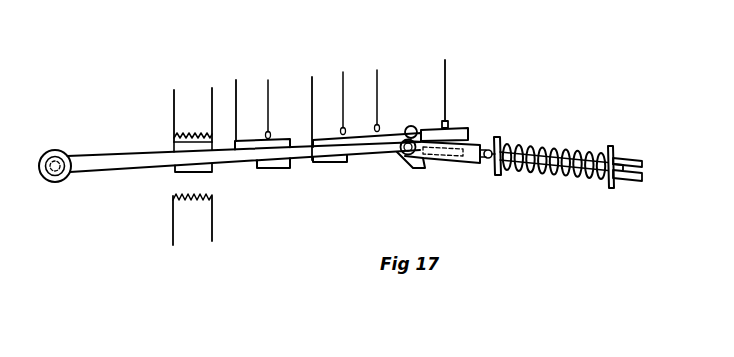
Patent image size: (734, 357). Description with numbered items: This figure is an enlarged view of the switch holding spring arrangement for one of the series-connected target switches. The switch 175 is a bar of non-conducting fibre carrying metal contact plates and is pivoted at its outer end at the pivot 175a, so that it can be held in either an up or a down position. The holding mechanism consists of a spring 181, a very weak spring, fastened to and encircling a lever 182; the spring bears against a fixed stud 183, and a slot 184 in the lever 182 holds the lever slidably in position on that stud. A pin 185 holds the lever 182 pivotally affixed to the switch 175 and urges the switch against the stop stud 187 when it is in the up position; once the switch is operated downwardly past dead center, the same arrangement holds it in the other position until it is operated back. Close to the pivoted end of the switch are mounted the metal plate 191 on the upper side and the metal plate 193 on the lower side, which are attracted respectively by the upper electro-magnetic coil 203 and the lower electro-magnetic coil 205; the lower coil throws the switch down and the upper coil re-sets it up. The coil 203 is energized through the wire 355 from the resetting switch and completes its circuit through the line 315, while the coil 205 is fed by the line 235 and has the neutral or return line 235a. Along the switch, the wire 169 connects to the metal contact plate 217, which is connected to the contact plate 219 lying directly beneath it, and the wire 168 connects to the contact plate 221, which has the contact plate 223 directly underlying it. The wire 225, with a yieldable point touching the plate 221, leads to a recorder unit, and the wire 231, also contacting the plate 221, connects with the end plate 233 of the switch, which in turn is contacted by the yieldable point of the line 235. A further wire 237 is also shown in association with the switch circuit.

The switch 175 is at (113, 169).
The pivot of switch 175a is at (57, 163).
The metal plate 191 is at (173, 143).
The electro-magnetic coil 203 is at (188, 133).
The wire 355 is at (175, 91).
The line 315 is at (208, 93).
The metal plate 193 is at (175, 173).
The electro-magnetic coil 205 is at (186, 200).
The neutral or return line 235a is at (173, 245).
The line 235 is at (447, 72).
The wire 169 is at (236, 80).
The wire 237 is at (267, 80).
The metal contact plate 217 is at (302, 112).
The contact plate 219 is at (272, 168).
The wire 168 is at (313, 78).
The contact plate 223 is at (318, 163).
The wire 225 is at (344, 73).
The wire 231 is at (378, 78).
The contact plate 221 is at (410, 126).
The stop stud 187 is at (459, 128).
The end plate 233 is at (481, 138).
The pin 185 is at (398, 155).
The lever 182 is at (478, 150).
The spring 181 is at (551, 149).
The slot 184 is at (630, 160).
The fixed stud 183 is at (616, 180).